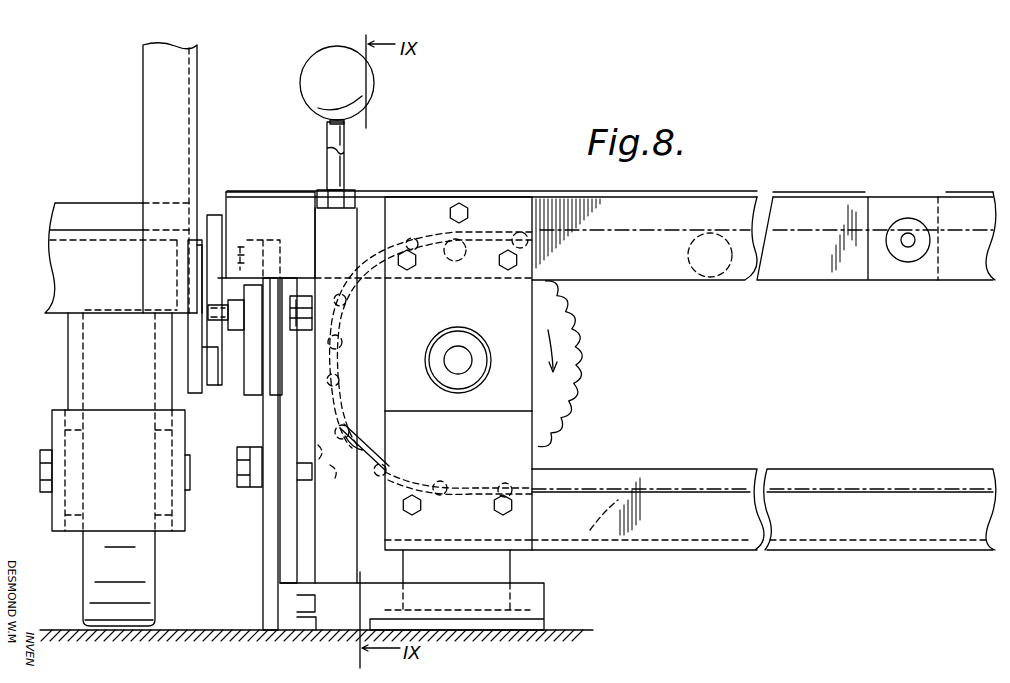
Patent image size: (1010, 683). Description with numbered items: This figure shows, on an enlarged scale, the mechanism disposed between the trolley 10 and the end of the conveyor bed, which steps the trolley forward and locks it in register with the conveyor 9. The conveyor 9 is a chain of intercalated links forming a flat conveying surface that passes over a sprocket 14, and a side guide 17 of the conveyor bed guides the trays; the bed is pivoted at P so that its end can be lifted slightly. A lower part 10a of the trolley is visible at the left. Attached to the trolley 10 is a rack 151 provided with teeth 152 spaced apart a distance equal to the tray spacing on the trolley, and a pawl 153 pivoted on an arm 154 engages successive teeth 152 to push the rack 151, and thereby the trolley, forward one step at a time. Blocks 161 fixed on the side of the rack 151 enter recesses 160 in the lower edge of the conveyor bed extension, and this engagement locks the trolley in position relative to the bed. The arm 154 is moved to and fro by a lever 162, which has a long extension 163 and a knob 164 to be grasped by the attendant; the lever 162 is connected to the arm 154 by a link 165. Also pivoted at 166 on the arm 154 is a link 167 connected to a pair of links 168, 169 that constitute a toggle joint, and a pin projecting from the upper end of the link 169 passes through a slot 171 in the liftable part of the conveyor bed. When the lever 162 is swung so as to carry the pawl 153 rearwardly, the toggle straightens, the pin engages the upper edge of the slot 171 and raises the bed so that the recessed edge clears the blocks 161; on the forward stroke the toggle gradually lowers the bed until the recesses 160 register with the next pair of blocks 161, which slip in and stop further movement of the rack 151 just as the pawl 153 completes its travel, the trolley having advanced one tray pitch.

The trolley 10 is at (103, 232).
The base foot 10a is at (92, 572).
The conveyor 9 is at (505, 228).
The sprocket 14 is at (580, 378).
The side guide 17 is at (470, 197).
The rack 151 is at (244, 333).
The teeth 152 is at (244, 290).
The pawl 153 is at (243, 246).
The arm 154 is at (268, 401).
The recess 160 is at (205, 322).
The block 161 is at (228, 310).
The lever 162 is at (345, 242).
The extension 163 is at (344, 166).
The knob 164 is at (357, 90).
The link 165 is at (356, 447).
The pivot 166 is at (333, 472).
The link 167 is at (255, 480).
The link 168 is at (265, 563).
The link 169 is at (283, 418).
The slot 171 is at (300, 378).
The pivot P is at (903, 222).